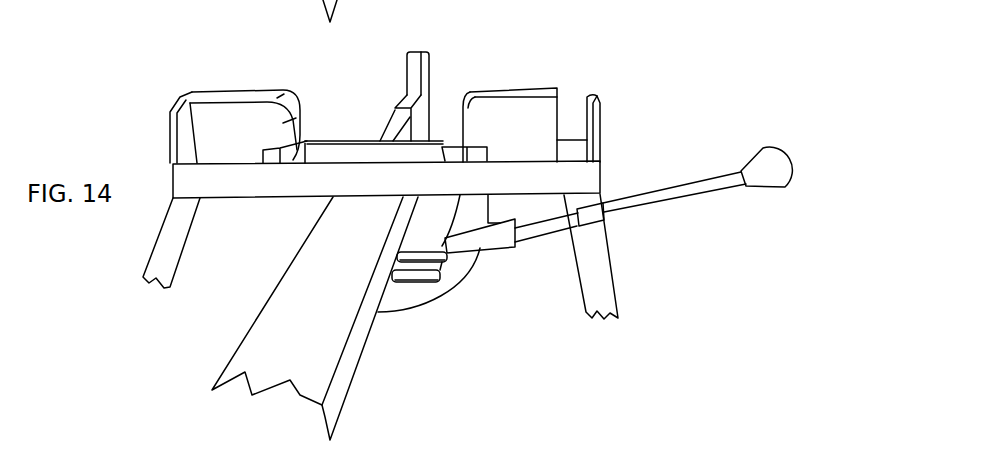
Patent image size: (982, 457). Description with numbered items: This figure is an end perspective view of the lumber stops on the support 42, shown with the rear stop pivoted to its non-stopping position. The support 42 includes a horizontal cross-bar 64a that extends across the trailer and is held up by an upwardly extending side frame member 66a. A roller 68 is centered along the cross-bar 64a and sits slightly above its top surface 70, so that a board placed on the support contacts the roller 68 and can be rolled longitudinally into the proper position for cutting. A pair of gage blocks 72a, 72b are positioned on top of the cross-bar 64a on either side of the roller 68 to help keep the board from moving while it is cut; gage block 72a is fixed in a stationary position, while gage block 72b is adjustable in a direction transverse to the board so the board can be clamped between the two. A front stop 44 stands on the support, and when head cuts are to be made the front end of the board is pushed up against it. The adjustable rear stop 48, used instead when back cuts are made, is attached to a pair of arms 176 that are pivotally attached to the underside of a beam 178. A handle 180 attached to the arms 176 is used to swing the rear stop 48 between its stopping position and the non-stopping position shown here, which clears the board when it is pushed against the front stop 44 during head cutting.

The support 42 is at (660, 70).
The front stop 44 is at (427, 70).
The adjustable rear stop 48 is at (485, 242).
The cross-bar 64a is at (588, 183).
The side frame member 66a is at (603, 292).
The roller 68 is at (343, 152).
The top surface 70 is at (573, 153).
The gage block 72a is at (517, 92).
The gage block 72b is at (242, 92).
The arms 176 is at (418, 295).
The beam 178 is at (268, 317).
The handle 180 is at (772, 160).